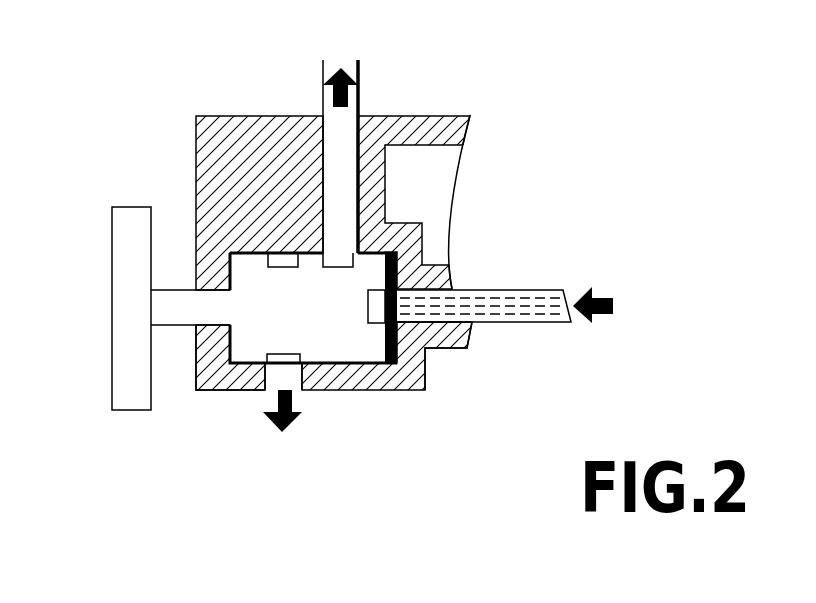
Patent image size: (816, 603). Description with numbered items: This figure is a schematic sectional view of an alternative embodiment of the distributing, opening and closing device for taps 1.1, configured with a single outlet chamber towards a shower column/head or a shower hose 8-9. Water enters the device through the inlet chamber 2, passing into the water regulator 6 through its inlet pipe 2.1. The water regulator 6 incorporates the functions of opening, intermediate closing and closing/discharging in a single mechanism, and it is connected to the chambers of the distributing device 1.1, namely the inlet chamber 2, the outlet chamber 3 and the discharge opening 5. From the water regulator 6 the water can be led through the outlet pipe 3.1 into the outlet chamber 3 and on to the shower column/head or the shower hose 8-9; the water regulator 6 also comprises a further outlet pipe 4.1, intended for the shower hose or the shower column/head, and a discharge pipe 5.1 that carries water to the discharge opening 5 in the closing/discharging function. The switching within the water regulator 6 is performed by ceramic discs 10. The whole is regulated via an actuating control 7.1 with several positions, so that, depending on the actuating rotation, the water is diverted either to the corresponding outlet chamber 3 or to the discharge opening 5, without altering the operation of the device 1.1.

The distributing, opening and closing device for taps 1.1 is at (272, 152).
The inlet chamber 2 is at (473, 300).
The inlet pipe 2.1 is at (397, 340).
The outlet chamber 3 is at (338, 193).
The outlet pipe 3.1 is at (343, 258).
The outlet pipe 4.1 is at (286, 268).
The discharge opening 5 is at (275, 380).
The discharge pipe 5.1 is at (196, 390).
The water regulator 6 is at (333, 330).
The actuating control 7.1 is at (130, 380).
The shower column/head or shower hose 8-9 is at (338, 65).
The ceramic discs 10 is at (384, 335).